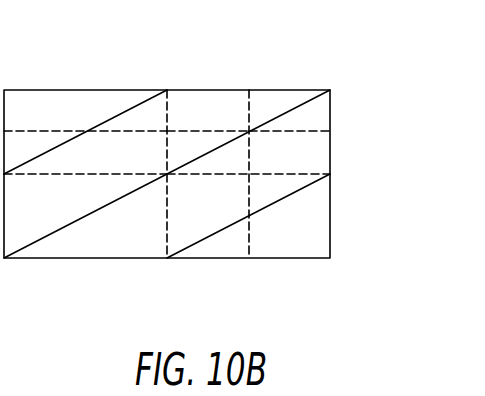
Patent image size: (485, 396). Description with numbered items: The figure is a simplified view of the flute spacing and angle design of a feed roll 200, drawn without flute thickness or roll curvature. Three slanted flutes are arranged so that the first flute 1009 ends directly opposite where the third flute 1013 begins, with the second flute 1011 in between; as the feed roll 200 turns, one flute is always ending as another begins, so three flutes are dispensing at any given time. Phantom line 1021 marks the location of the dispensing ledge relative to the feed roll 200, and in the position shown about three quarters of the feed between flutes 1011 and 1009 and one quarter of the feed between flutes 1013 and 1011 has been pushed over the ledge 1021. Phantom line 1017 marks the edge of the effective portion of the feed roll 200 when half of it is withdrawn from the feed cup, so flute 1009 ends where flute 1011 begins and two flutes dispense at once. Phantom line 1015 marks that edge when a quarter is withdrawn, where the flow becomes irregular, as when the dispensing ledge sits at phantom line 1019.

The feed roll 200 is at (330, 122).
The first flute 1009 is at (125, 110).
The second flute 1011 is at (288, 110).
The third flute 1013 is at (302, 188).
The phantom line 1015 is at (249, 238).
The phantom line 1017 is at (167, 229).
The phantom line 1019 is at (198, 131).
The phantom line 1021 is at (333, 174).